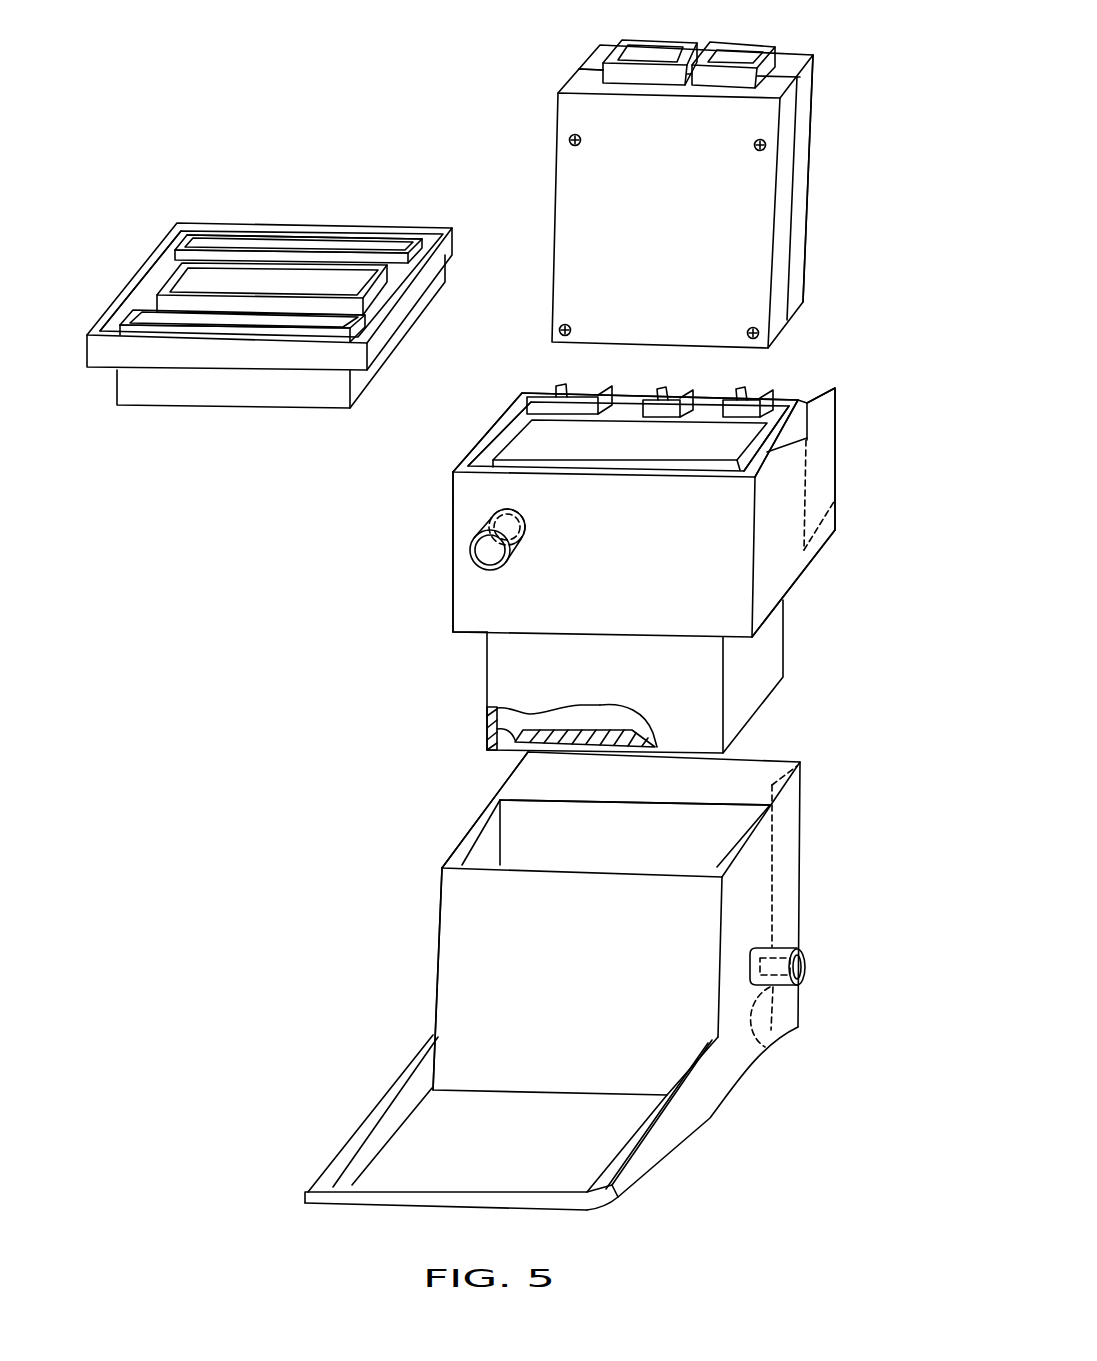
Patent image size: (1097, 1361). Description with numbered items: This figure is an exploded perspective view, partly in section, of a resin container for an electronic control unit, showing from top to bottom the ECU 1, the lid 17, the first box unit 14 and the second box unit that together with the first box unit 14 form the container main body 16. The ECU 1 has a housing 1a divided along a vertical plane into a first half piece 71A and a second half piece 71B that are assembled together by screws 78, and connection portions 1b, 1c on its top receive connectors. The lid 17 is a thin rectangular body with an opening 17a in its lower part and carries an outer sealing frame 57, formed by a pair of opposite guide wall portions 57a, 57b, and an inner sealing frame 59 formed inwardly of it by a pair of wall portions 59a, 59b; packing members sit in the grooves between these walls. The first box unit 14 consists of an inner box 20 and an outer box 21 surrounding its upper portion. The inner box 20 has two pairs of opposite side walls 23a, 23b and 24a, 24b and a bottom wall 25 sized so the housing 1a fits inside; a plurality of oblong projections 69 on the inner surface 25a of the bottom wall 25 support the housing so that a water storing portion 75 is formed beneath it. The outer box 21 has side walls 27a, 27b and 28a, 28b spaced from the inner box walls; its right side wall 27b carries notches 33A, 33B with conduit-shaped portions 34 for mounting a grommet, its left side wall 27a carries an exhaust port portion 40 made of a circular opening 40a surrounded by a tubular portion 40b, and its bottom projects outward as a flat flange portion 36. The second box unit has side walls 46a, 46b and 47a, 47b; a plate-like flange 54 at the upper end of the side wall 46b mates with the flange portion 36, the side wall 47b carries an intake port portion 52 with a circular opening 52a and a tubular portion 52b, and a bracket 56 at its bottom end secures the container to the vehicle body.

The ECU 1 is at (560, 123).
The housing 1a is at (808, 102).
The connection portion 1b is at (650, 40).
The connection portion 1c is at (736, 42).
The first half piece 71A is at (576, 78).
The second half piece 71B is at (801, 52).
The screws 78 is at (568, 139).
The lid 17 is at (243, 409).
The opening 17a is at (185, 225).
The outer sealing frame 57 is at (308, 232).
The guide wall portion 57a is at (258, 225).
The guide wall portion 57b is at (233, 242).
The inner sealing frame 59 is at (185, 300).
The wall portion 59a is at (312, 330).
The wall portion 59b is at (335, 298).
The first box unit 14 is at (495, 440).
The inner box 20 is at (493, 452).
The side wall 28a is at (512, 458).
The side wall 24a is at (508, 405).
The side wall 23a is at (455, 482).
The left side wall 27a is at (463, 522).
The side wall 24b is at (810, 437).
The flange portion 36 is at (833, 493).
The side wall 28b is at (790, 583).
The side wall 23b is at (765, 412).
The right side wall 27b is at (745, 400).
The notch 33A is at (722, 400).
The notch 33B is at (612, 390).
The conduit-shaped portion 34 is at (672, 388).
The exhaust port portion 40 is at (468, 552).
The opening 40a is at (485, 510).
The tubular portion 40b is at (503, 562).
The outer box 21 is at (463, 625).
The inner surface 25a is at (497, 727).
The bottom wall 25 is at (510, 750).
The water storing portion 75 is at (550, 718).
The projections 69 is at (622, 728).
The container main body 16 is at (392, 691).
The flange 54 is at (755, 768).
The side wall 46a is at (455, 923).
The side wall 46b is at (542, 806).
The side wall 47a is at (468, 842).
The right side wall 47b is at (755, 850).
The intake port portion 52 is at (797, 987).
The opening 52a is at (768, 1048).
The tubular portion 52b is at (780, 952).
The bracket 56 is at (688, 1130).